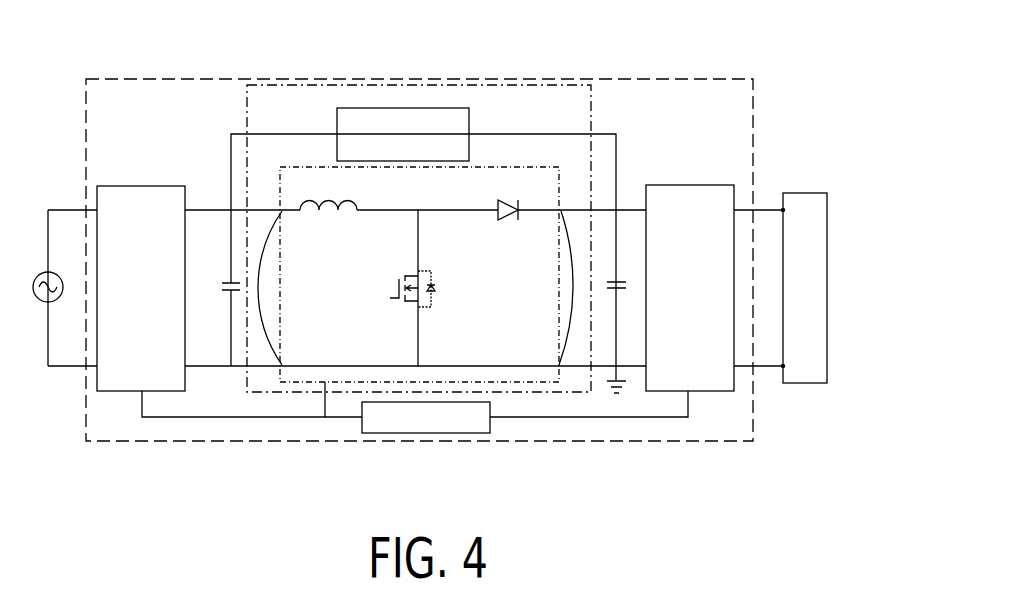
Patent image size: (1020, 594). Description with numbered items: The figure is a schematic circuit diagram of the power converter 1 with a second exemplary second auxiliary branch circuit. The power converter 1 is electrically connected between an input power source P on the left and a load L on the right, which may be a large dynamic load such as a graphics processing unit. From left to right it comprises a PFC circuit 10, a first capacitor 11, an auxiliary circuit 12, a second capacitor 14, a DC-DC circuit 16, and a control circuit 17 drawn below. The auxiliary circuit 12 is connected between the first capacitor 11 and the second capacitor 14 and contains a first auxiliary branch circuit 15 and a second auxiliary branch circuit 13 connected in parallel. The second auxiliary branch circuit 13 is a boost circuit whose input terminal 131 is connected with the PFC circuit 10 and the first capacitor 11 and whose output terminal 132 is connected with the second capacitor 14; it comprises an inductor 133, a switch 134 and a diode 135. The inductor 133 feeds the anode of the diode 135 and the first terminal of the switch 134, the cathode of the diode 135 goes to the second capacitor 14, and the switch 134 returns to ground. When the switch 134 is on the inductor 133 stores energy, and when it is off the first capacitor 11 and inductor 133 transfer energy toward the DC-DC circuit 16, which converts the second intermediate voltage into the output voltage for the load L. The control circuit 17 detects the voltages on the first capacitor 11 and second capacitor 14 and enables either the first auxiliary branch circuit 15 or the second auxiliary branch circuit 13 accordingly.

The power converter 1 is at (708, 78).
The input power source P is at (54, 273).
The PFC circuit 10 is at (130, 186).
The first capacitor 11 is at (231, 282).
The auxiliary circuit 12 is at (592, 108).
The second auxiliary branch circuit 13 is at (512, 167).
The input terminal 131 is at (265, 288).
The output terminal 132 is at (574, 288).
The inductor 133 is at (327, 213).
The switch 134 is at (410, 270).
The diode 135 is at (510, 222).
The second capacitor 14 is at (618, 281).
The first auxiliary branch circuit 15 is at (432, 108).
The DC-DC circuit 16 is at (683, 185).
The control circuit 17 is at (491, 410).
The load L is at (800, 193).